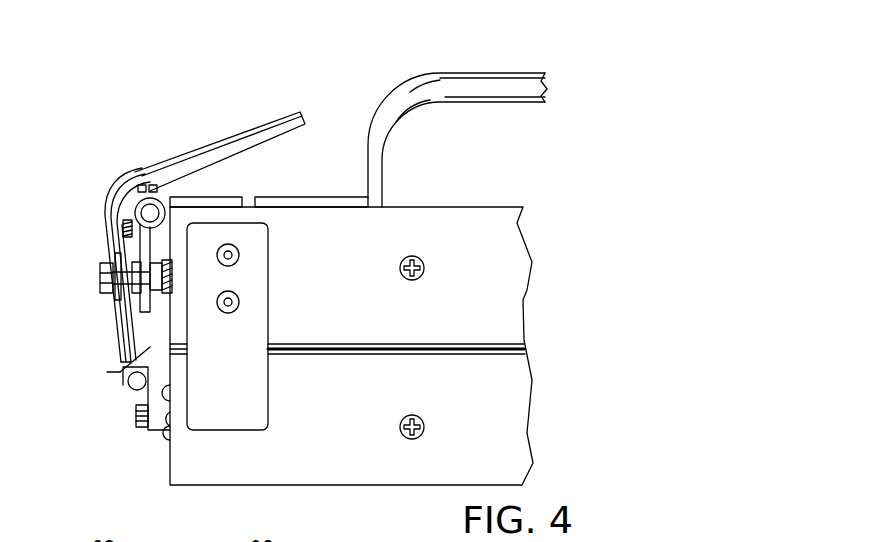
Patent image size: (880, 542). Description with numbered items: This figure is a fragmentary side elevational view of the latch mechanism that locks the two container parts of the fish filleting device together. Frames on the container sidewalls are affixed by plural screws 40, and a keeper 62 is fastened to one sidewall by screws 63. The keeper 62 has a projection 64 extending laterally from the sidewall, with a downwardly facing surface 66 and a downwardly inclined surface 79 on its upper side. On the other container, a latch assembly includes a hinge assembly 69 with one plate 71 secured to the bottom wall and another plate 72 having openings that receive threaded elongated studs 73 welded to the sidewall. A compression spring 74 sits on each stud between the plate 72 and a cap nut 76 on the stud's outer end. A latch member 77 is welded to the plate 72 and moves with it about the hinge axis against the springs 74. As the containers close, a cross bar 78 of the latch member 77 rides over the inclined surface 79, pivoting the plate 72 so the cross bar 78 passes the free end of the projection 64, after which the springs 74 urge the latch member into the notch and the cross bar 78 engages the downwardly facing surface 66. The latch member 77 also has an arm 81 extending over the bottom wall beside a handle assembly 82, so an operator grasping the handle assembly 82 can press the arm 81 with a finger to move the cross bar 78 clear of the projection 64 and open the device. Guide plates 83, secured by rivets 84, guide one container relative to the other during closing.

The screws 40 is at (421, 261).
The keeper 62 is at (118, 373).
The screws 63 is at (135, 415).
The projection 64 is at (135, 352).
The downwardly facing surface 66 is at (128, 364).
The hinge assembly 69 is at (142, 188).
The plate 71 is at (203, 206).
The plate 72 is at (142, 253).
The threaded elongated studs 73 is at (152, 272).
The compression spring 74 is at (132, 265).
The cap nut 76 is at (100, 279).
The latch member 77 is at (128, 325).
The cross bar 78 is at (132, 386).
The downwardly inclined surface 79 is at (152, 342).
The arm 81 is at (254, 134).
The handle assembly 82 is at (443, 69).
The guide plates 83 is at (255, 395).
The rivets 84 is at (240, 258).